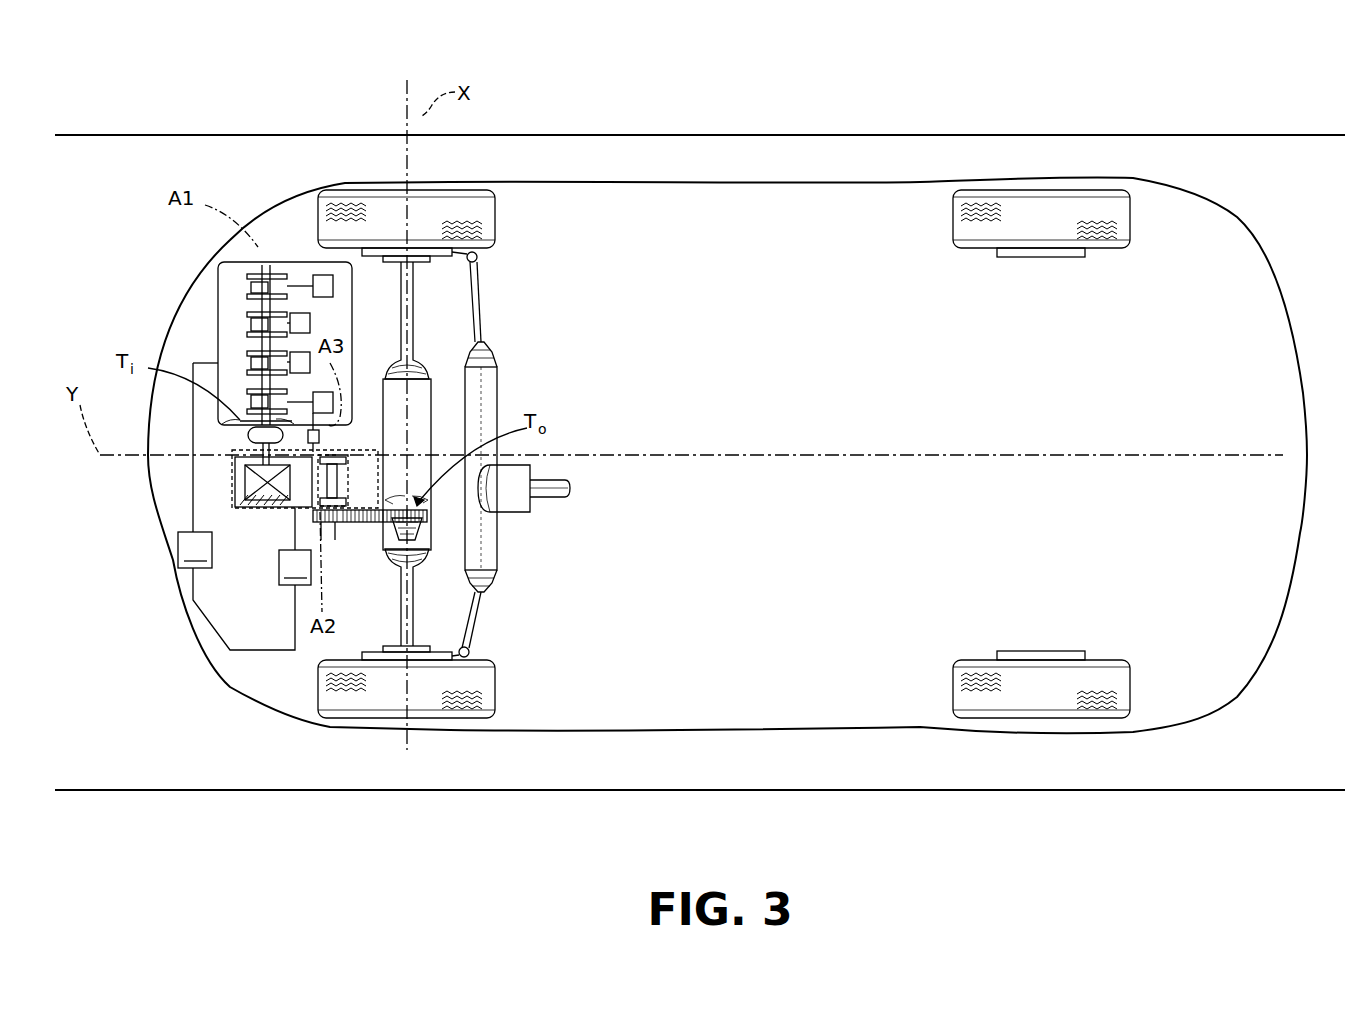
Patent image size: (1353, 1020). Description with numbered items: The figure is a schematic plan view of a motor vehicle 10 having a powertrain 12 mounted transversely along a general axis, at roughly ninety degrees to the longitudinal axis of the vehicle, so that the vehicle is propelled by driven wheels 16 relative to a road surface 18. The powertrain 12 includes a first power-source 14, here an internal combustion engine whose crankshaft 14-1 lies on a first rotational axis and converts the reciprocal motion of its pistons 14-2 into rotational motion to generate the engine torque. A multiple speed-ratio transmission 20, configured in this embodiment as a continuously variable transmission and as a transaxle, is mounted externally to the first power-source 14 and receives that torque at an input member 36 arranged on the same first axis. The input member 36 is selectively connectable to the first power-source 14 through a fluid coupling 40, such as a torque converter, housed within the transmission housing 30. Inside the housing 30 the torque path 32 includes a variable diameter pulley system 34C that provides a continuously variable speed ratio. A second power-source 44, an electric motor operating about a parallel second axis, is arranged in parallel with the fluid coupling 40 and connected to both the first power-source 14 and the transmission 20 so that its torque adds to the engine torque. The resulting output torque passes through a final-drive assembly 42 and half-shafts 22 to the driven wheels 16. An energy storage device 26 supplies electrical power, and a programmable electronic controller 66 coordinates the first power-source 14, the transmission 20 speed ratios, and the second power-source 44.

The motor vehicle 10 is at (1096, 96).
The powertrain 12 is at (267, 557).
The first power-source 14 is at (231, 329).
The crankshaft 14-1 is at (255, 305).
The pistons 14-2 is at (322, 280).
The driven wheels 16 is at (445, 205).
The road surface 18 is at (153, 747).
The multiple speed-ratio transmission 20 is at (262, 522).
The half-shafts 22 is at (412, 325).
The energy storage device 26 is at (295, 567).
The transmission housing 30 is at (354, 447).
The torque path 32 is at (233, 483).
The variable diameter pulley system 34C is at (240, 490).
The input member 36 is at (242, 457).
The fluid coupling 40 is at (255, 432).
The final-drive assembly 42 is at (353, 536).
The second power-source 44 is at (350, 452).
The programmable electronic controller 66 is at (236, 506).